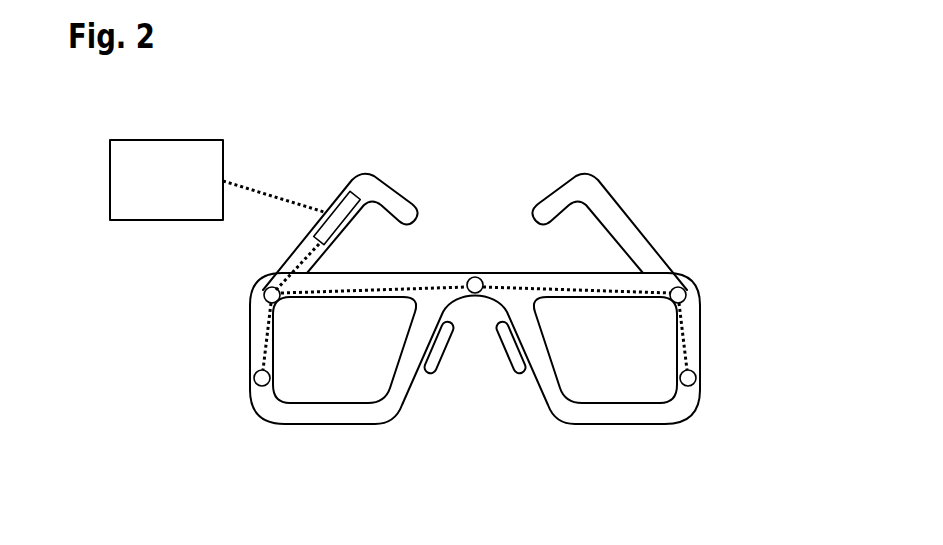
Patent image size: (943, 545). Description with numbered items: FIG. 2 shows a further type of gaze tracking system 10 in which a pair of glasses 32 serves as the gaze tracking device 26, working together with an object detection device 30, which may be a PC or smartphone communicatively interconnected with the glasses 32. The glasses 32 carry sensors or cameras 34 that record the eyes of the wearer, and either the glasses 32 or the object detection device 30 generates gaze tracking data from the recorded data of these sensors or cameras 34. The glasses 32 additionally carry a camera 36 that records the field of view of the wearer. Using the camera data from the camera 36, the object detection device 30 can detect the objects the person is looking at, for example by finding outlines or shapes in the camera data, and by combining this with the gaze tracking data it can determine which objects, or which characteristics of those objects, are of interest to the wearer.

The gaze tracking system 10 is at (474, 322).
The gaze tracking device 26 is at (252, 425).
The object detection device 30 is at (122, 183).
The glasses 32 is at (332, 413).
The sensors or cameras 34 is at (266, 296).
The camera 36 is at (475, 277).